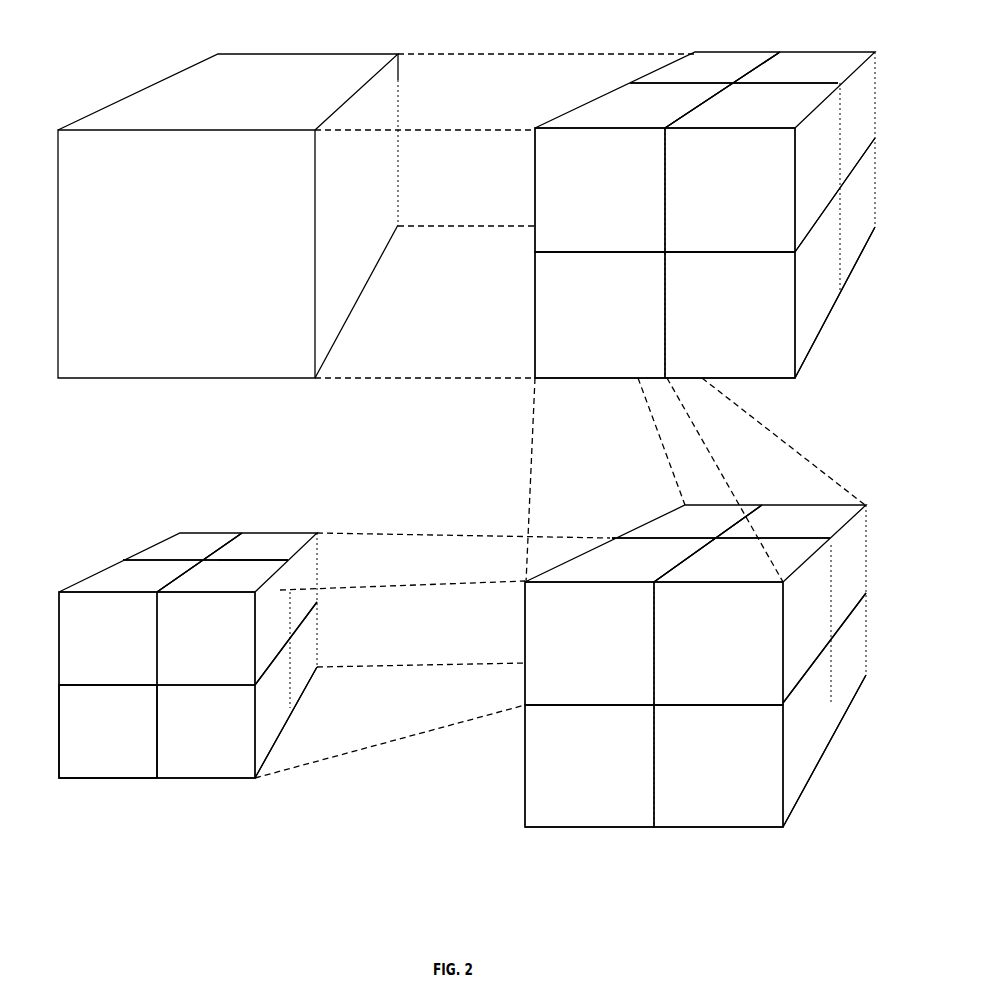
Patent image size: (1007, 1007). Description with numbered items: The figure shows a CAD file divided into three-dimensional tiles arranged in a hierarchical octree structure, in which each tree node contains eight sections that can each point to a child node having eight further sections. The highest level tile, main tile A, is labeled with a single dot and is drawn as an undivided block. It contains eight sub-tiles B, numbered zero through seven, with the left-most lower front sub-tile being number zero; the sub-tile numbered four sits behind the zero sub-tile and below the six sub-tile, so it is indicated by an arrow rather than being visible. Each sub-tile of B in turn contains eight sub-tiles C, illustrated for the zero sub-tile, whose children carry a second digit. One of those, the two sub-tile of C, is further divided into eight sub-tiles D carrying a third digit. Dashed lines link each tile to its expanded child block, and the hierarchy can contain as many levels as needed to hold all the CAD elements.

The main tile A is at (258, 53).
The sub-tiles B is at (715, 52).
The sub-tiles C is at (660, 512).
The sub-tiles D is at (222, 530).